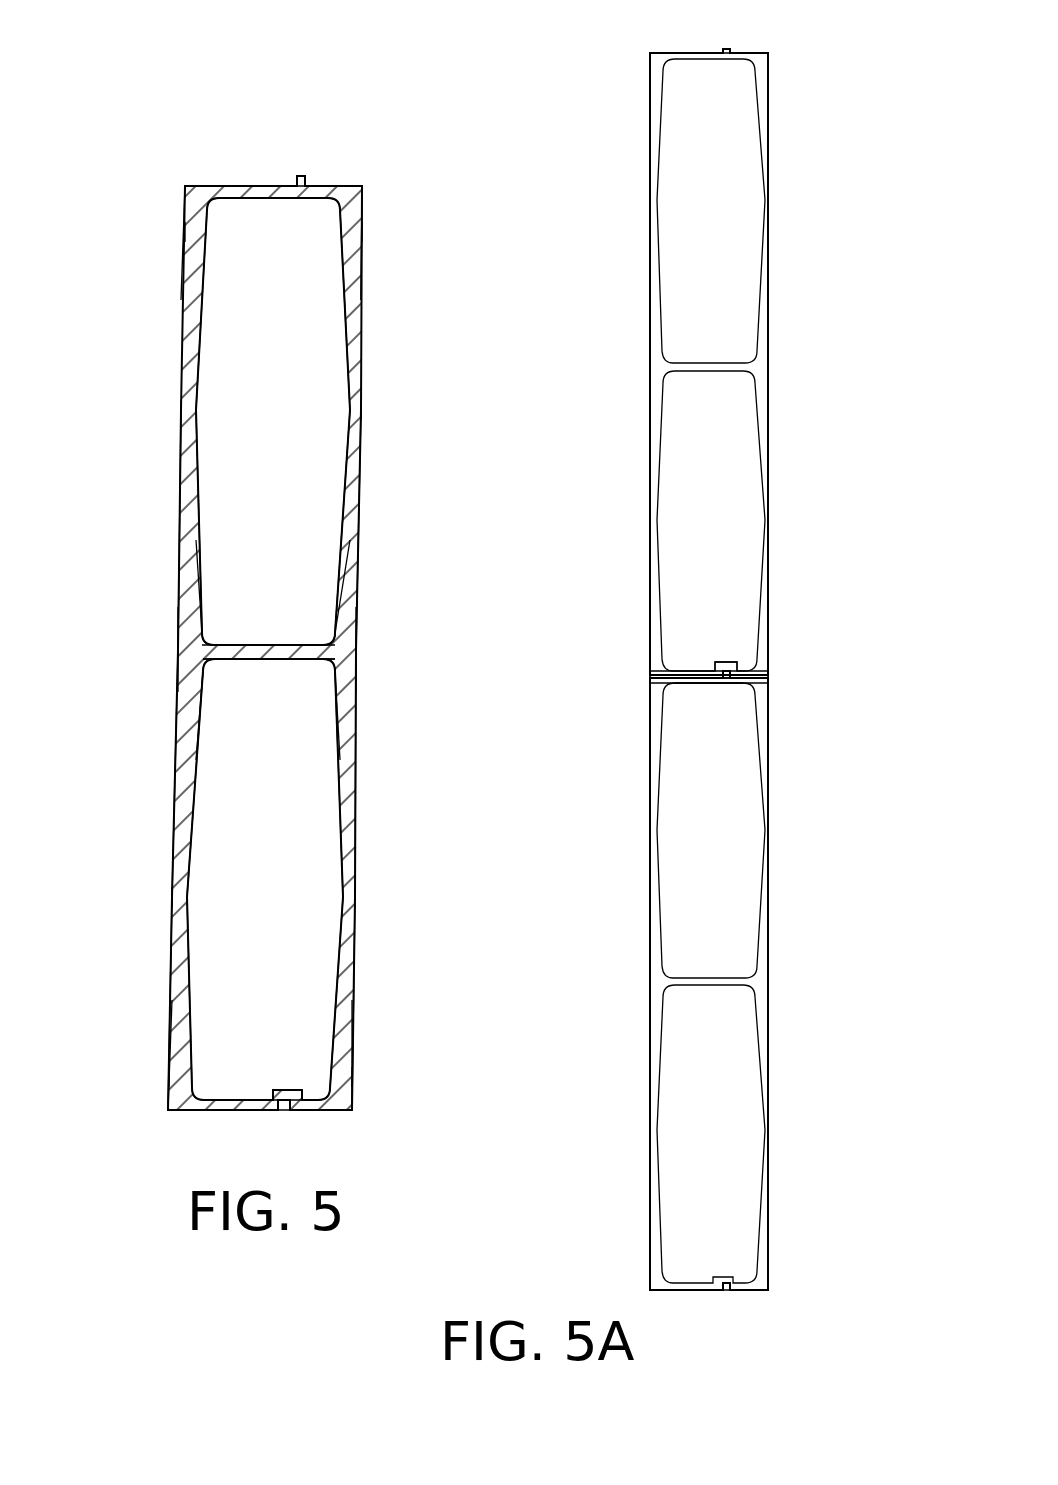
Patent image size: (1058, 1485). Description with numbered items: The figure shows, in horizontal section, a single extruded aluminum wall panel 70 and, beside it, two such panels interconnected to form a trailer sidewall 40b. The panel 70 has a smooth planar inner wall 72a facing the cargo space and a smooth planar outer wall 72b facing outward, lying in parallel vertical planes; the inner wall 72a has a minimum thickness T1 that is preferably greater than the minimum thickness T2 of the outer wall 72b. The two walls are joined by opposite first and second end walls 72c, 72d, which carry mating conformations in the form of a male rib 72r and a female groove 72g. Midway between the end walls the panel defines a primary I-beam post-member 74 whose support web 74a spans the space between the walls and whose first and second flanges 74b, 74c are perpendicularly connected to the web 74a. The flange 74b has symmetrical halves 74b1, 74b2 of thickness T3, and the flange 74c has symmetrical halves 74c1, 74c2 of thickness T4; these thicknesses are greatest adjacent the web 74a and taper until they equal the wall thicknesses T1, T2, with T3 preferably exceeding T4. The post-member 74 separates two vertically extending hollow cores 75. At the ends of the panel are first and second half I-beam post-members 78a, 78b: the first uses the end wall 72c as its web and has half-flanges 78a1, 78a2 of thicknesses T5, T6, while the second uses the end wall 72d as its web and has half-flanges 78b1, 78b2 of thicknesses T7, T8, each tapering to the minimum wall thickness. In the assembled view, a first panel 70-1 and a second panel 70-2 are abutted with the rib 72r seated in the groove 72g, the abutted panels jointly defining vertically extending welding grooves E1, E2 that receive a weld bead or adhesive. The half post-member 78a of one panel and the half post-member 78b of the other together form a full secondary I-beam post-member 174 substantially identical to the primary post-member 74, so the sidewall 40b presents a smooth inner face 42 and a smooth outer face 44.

In FIG. 5, the wall panel 70 is at (378, 362).
In FIG. 5, the male rib 72r is at (303, 178).
In FIG. 5A, the male rib 72r is at (728, 50).
In FIG. 5, the first end wall 72c is at (277, 202).
In FIG. 5A, the first end wall 72c is at (706, 690).
In FIG. 5, the second end wall 72d is at (276, 1090).
In FIG. 5A, the second end wall 72d is at (718, 660).
In FIG. 5, the female groove 72g is at (284, 1112).
In FIG. 5A, the female groove 72g is at (727, 672).
In FIG. 5, the inner wall 72a is at (168, 970).
In FIG. 5A, the inner wall 72a is at (645, 486).
In FIG. 5, the outer wall 72b is at (370, 970).
In FIG. 5A, the outer wall 72b is at (775, 486).
In FIG. 5, the primary I-beam post-member 74 is at (362, 600).
In FIG. 5, the support web 74a is at (268, 662).
In FIG. 5, the first flange 74b is at (208, 608).
In FIG. 5, the second flange 74c is at (328, 608).
In FIG. 5, the first half of first flange 74b1 is at (186, 590).
In FIG. 5, the second half of first flange 74b2 is at (186, 700).
In FIG. 5, the first half of second flange 74c1 is at (350, 590).
In FIG. 5, the second half of second flange 74c2 is at (350, 700).
In FIG. 5, the hollow core 75 is at (290, 495).
In FIG. 5, the first half I-beam post-member 78a is at (372, 256).
In FIG. 5A, the first half I-beam post-member 78a is at (775, 706).
In FIG. 5, the first half-flange of first half I-beam post-member 78a1 is at (190, 272).
In FIG. 5, the second half-flange of first half I-beam post-member 78a2 is at (352, 280).
In FIG. 5, the second half I-beam post-member 78b is at (370, 1105).
In FIG. 5A, the second half I-beam post-member 78b is at (775, 650).
In FIG. 5, the first half-flange of second half I-beam post-member 78b1 is at (178, 1056).
In FIG. 5, the second half-flange of second half I-beam post-member 78b2 is at (345, 1056).
In FIG. 5, the minimum thickness of inner wall T1 is at (250, 410).
In FIG. 5, the minimum thickness of outer wall T2 is at (293, 410).
In FIG. 5, the thickness of first flange halves T3 is at (248, 617).
In FIG. 5, the thickness of second flange halves T4 is at (290, 617).
In FIG. 5, the thickness of half-flange 78a1 T5 is at (262, 232).
In FIG. 5, the thickness of half-flange 78a2 T6 is at (285, 232).
In FIG. 5, the thickness of half-flange 78b1 T7 is at (245, 1077).
In FIG. 5, the thickness of half-flange 78b2 T8 is at (275, 1077).
In FIG. 5A, the sidewall 40b is at (790, 118).
In FIG. 5A, the first panel 70-1 is at (780, 1112).
In FIG. 5A, the second panel 70-2 is at (790, 222).
In FIG. 5A, the secondary I-beam post-member 174 is at (645, 672).
In FIG. 5A, the first welding groove E1 is at (650, 677).
In FIG. 5A, the second welding groove E2 is at (770, 677).
In FIG. 5A, the inner face 42 is at (645, 1192).
In FIG. 5A, the outer face 44 is at (780, 1236).